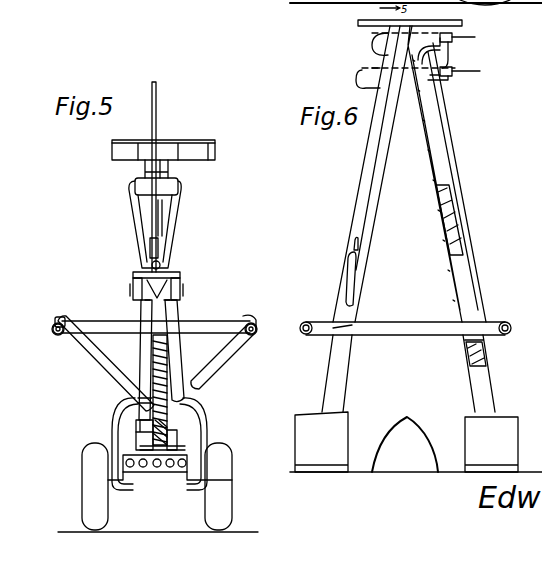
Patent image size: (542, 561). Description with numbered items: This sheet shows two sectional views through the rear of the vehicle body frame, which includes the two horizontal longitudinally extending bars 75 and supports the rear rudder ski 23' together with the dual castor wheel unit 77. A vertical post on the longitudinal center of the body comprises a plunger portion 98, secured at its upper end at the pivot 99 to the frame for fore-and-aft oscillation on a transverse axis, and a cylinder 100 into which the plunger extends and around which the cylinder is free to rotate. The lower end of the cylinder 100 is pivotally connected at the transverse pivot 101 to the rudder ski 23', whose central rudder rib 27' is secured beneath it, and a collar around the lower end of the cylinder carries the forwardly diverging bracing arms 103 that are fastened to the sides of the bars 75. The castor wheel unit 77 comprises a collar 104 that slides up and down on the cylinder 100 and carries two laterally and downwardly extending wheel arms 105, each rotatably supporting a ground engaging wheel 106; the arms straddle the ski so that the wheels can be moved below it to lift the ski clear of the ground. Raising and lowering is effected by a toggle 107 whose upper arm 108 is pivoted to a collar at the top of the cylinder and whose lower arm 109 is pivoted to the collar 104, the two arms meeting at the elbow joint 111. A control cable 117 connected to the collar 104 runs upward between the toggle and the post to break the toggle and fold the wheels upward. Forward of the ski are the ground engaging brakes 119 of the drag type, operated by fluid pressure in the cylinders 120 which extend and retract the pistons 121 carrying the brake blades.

In FIG. 5, the control cable 117 is at (156, 96).
In FIG. 5, the upper end pivot 99 is at (175, 152).
In FIG. 5, the upper arm 108 is at (136, 213).
In FIG. 5, the toggle 107 is at (185, 240).
In FIG. 5, the elbow joint 111 is at (188, 298).
In FIG. 5, the lower arm 109 is at (146, 318).
In FIG. 5, the plunger portion 98 is at (165, 342).
In FIG. 5, the bracing arms 103 is at (100, 363).
In FIG. 5, the horizontal longitudinally extending bars 75 is at (56, 336).
In FIG. 6, the horizontal longitudinally extending bars 75 is at (512, 336).
In FIG. 5, the cylinder 100 is at (168, 356).
In FIG. 5, the collar 104 is at (150, 398).
In FIG. 5, the castor wheel unit 77 is at (192, 420).
In FIG. 5, the wheel arms 105 is at (120, 450).
In FIG. 5, the pivot 101 is at (178, 440).
In FIG. 5, the ground engaging wheel 106 is at (92, 482).
In FIG. 5, the central rudder rib 27' is at (170, 483).
In FIG. 6, the cylinders 120 is at (362, 150).
In FIG. 6, the pistons 121 is at (340, 360).
In FIG. 6, the ground engaging brakes 119 is at (322, 446).
In FIG. 6, the rear rudder ski 23' is at (403, 431).